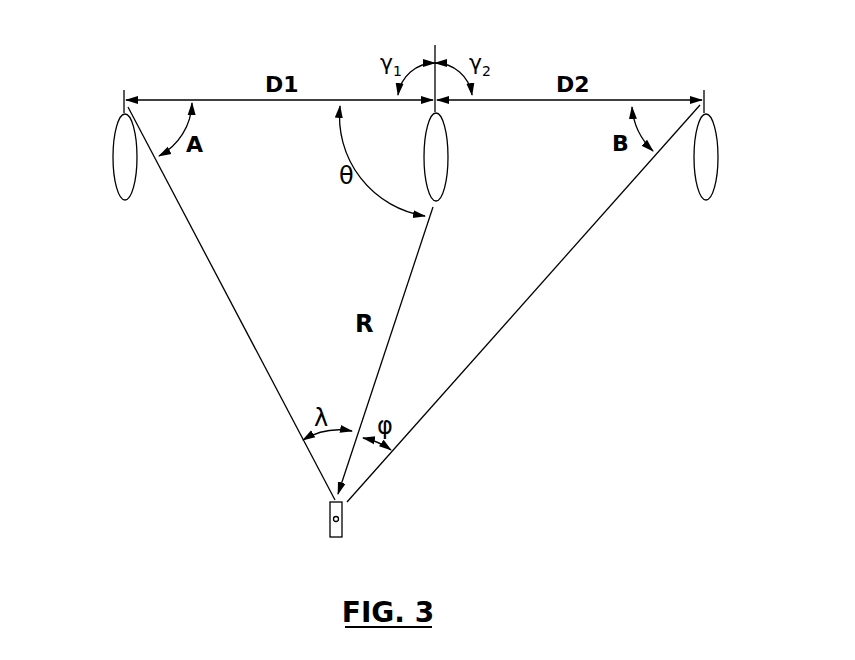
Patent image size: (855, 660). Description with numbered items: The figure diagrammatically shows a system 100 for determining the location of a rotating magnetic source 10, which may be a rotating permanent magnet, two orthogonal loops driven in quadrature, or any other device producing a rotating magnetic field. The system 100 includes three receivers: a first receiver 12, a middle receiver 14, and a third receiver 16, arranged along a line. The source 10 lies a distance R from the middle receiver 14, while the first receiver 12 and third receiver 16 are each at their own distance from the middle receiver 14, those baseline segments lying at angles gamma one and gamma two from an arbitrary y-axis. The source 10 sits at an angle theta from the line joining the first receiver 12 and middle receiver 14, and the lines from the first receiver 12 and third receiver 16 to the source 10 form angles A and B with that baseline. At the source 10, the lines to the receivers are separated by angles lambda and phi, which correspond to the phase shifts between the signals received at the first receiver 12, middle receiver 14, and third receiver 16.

The rotating magnetic source 10 is at (322, 543).
The first receiver 12 is at (113, 178).
The middle receiver 14 is at (448, 153).
The third receiver 16 is at (717, 140).
The system 100 is at (634, 297).